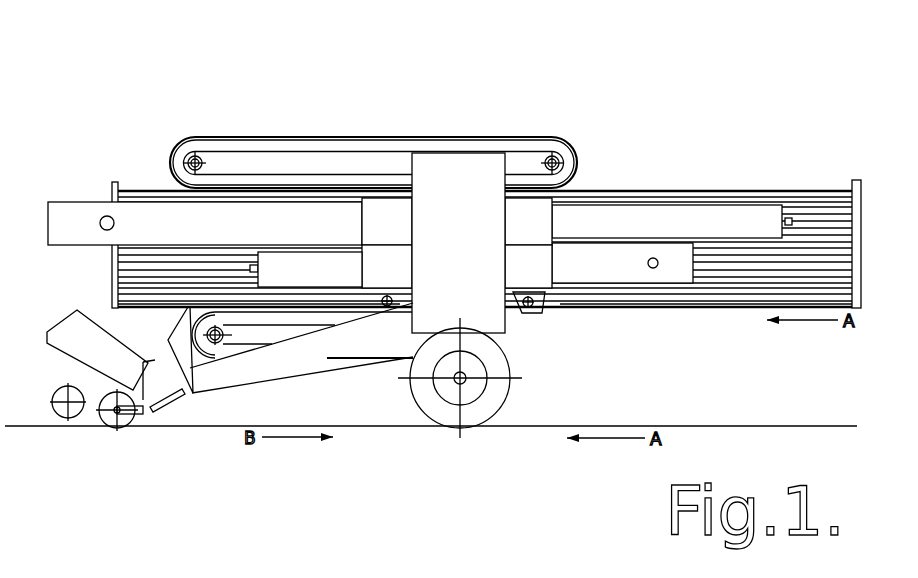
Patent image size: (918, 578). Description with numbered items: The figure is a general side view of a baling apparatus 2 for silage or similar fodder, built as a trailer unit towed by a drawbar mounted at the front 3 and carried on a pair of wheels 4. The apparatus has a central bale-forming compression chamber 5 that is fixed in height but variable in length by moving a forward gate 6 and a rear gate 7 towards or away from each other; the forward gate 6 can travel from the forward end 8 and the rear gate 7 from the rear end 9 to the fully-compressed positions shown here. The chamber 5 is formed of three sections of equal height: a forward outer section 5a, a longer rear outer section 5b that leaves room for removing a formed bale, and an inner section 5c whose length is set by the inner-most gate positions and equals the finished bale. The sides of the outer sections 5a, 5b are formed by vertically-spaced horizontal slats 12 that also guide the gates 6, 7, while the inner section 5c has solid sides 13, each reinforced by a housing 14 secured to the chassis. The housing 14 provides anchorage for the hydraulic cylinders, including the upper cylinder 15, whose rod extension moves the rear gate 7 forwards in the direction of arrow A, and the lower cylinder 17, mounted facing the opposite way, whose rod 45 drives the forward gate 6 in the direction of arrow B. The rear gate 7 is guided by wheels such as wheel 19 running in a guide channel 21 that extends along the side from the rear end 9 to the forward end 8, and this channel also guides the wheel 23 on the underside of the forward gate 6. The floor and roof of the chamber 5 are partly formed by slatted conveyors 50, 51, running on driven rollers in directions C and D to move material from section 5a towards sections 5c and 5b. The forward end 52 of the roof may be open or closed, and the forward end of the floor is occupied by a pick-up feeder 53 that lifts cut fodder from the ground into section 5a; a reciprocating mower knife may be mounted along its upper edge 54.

The baling apparatus 2 is at (130, 105).
The front 3 is at (100, 277).
The wheels 4 is at (453, 419).
The compression chamber 5 is at (582, 350).
The outer section 5a is at (162, 307).
The outer section 5b is at (742, 300).
The inner section 5c is at (537, 322).
The forward gate 6 is at (360, 232).
The rear gate 7 is at (557, 210).
The forward end 8 is at (110, 185).
The rear end 9 is at (858, 208).
The horizontal slats 12 is at (802, 217).
The solid sides 13 is at (527, 196).
The housing 14 is at (458, 243).
The hydraulic cylinder 15 is at (677, 207).
The hydraulic cylinder 17 is at (306, 269).
The wheel 19 is at (542, 305).
The guide channel 21 is at (118, 300).
The wheel 23 is at (388, 308).
The rod 45 is at (622, 263).
The slatted conveyor 50 is at (357, 360).
The slatted conveyor 51 is at (283, 138).
The forward end of the roof 52 is at (135, 160).
The pick-up feeder 53 is at (67, 340).
The upper edge 54 is at (192, 307).